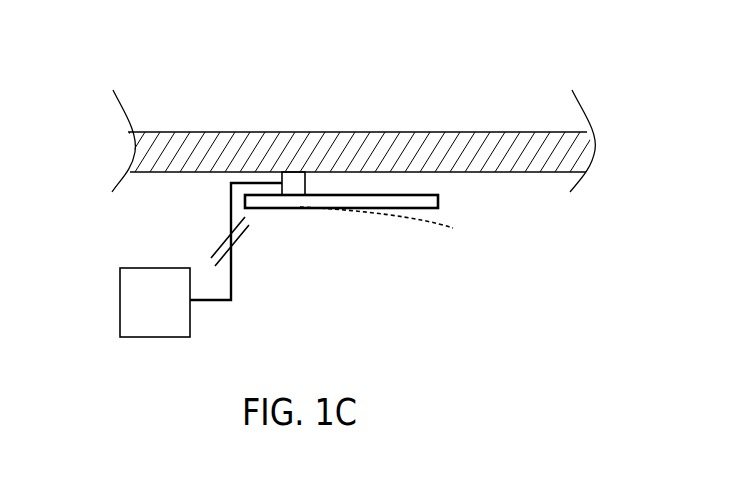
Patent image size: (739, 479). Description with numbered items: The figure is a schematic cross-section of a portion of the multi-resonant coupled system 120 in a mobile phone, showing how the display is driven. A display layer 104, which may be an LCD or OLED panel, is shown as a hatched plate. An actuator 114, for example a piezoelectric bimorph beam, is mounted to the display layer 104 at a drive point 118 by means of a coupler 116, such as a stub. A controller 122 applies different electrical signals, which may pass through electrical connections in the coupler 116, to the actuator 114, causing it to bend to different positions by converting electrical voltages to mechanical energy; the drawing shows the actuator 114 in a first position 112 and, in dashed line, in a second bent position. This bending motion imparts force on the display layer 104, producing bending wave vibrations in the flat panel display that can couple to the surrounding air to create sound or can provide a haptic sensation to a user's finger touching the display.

The display layer 104 is at (545, 155).
The position 112 is at (443, 198).
The actuator 114 is at (363, 217).
The coupler 116 is at (289, 187).
The drive point 118 is at (295, 150).
The multi-resonant coupled system 120 is at (56, 103).
The controller 122 is at (172, 315).